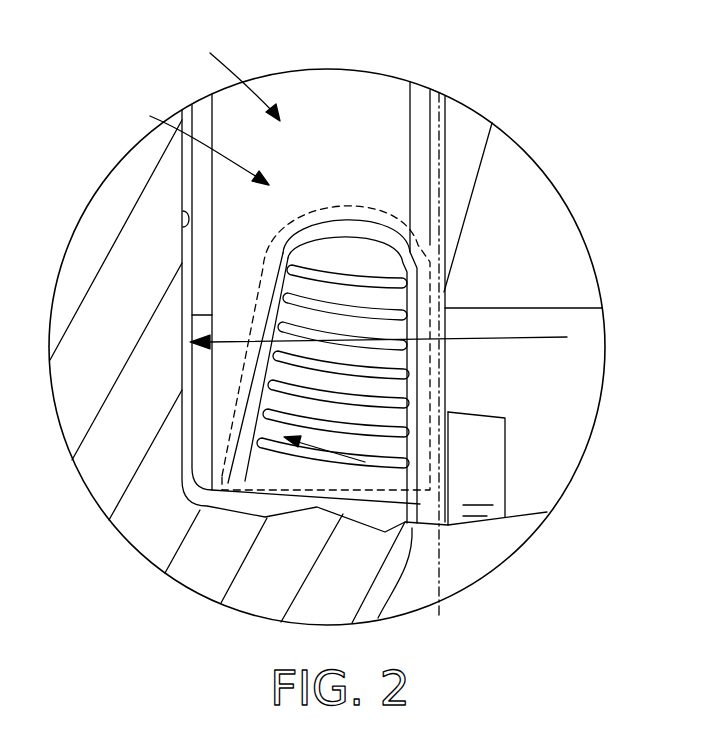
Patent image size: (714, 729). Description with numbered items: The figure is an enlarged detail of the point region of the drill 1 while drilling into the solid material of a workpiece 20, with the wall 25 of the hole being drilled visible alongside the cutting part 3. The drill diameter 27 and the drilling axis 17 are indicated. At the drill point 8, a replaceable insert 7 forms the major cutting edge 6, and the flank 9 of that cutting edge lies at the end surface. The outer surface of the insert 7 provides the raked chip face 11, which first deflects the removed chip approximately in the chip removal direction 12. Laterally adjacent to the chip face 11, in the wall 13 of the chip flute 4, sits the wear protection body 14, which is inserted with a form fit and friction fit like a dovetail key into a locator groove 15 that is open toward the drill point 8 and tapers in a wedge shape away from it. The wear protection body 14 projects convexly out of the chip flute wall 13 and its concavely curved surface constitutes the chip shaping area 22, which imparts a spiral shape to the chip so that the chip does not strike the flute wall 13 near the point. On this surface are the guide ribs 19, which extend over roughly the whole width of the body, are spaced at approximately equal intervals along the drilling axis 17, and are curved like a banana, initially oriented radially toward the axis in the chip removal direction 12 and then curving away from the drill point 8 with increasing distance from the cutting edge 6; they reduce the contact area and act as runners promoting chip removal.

The drill 1 is at (236, 74).
The cutting part 3 is at (198, 140).
The chip flute 4 is at (313, 102).
The major cutting edge 6 is at (450, 527).
The replaceable insert 7 is at (497, 453).
The drill point 8 is at (378, 618).
The flank 9 is at (546, 512).
The chip face 11 is at (447, 420).
The chip removal direction 12 is at (350, 457).
The chip flute wall 13 is at (348, 140).
The wear protection body 14 is at (480, 427).
The locator groove 15 is at (494, 490).
The drilling axis 17 is at (440, 583).
The guide ribs 19 is at (270, 410).
The workpiece 20 is at (103, 487).
The chip shaping area 22 is at (348, 295).
The wall of the hole 25 is at (183, 211).
The drill diameter 27 is at (545, 335).